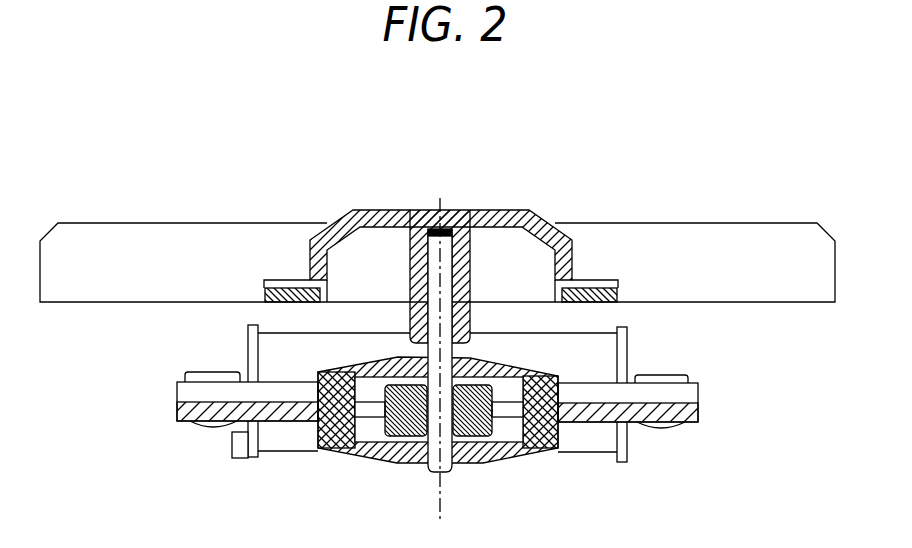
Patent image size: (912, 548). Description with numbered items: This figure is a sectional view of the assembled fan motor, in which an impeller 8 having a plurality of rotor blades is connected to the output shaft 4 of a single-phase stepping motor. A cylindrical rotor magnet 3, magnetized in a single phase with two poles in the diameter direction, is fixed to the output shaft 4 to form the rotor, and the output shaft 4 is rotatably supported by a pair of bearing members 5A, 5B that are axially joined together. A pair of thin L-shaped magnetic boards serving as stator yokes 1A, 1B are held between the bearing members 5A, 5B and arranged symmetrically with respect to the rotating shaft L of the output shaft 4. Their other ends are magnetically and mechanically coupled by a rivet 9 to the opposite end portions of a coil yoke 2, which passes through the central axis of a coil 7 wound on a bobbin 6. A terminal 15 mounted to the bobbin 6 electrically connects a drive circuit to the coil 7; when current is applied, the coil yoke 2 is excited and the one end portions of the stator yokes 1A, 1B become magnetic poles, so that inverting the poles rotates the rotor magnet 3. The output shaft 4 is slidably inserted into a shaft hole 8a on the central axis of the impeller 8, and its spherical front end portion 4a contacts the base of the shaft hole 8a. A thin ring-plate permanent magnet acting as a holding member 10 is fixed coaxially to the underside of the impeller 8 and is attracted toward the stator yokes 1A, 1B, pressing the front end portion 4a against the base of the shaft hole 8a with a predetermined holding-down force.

The stator yoke 1A is at (177, 410).
The stator yoke 1B is at (597, 415).
The coil yoke 2 is at (652, 443).
The rotor magnet 3 is at (502, 453).
The output shaft 4 is at (449, 351).
The front end portion 4a is at (447, 250).
The bearing member 5A is at (455, 436).
The bearing member 5B is at (345, 458).
The bobbin 6 is at (250, 462).
The coil 7 is at (278, 452).
The impeller 8 is at (627, 241).
The shaft hole 8a is at (413, 277).
The rivet 9 is at (676, 430).
The holding member 10 is at (290, 288).
The terminal 15 is at (232, 453).
The rotating shaft L is at (445, 498).